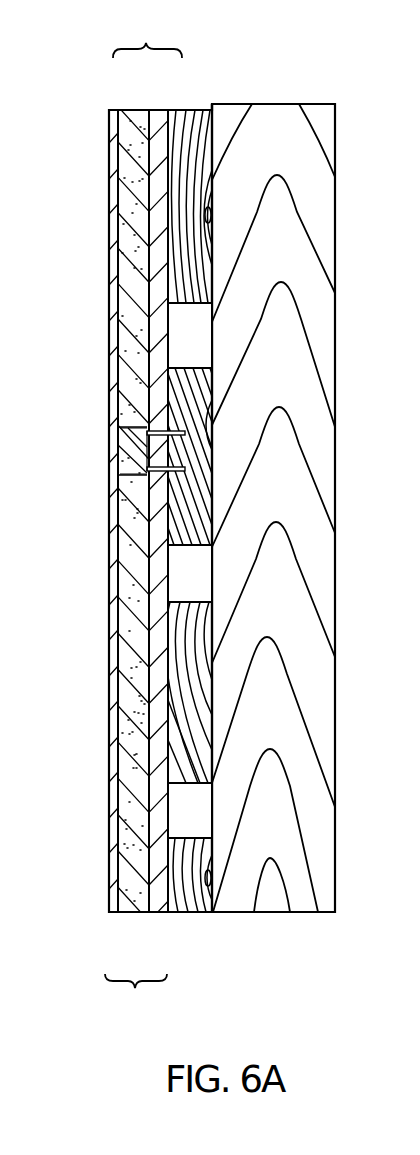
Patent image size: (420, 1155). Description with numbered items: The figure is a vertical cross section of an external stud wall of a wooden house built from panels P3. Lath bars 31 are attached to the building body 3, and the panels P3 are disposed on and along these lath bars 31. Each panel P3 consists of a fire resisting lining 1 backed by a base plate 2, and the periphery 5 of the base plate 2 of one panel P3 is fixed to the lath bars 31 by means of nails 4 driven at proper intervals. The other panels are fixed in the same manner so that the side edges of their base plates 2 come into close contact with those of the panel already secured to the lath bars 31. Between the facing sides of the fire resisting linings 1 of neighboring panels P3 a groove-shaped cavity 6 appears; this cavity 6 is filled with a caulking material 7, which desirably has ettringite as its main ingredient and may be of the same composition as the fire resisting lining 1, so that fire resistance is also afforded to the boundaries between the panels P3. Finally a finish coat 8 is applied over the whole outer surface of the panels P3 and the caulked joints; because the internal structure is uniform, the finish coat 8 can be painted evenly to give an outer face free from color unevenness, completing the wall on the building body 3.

The fire resisting lining 1 is at (137, 114).
The base plate 2 is at (160, 112).
The building body 3 is at (345, 253).
The nails 4 is at (185, 433).
The periphery 5 is at (147, 441).
The groove-shaped cavity 6 is at (130, 470).
The caulking material 7 is at (133, 451).
The finish coat 8 is at (107, 643).
The lath bars 31 is at (190, 537).
The panel P3 is at (143, 518).